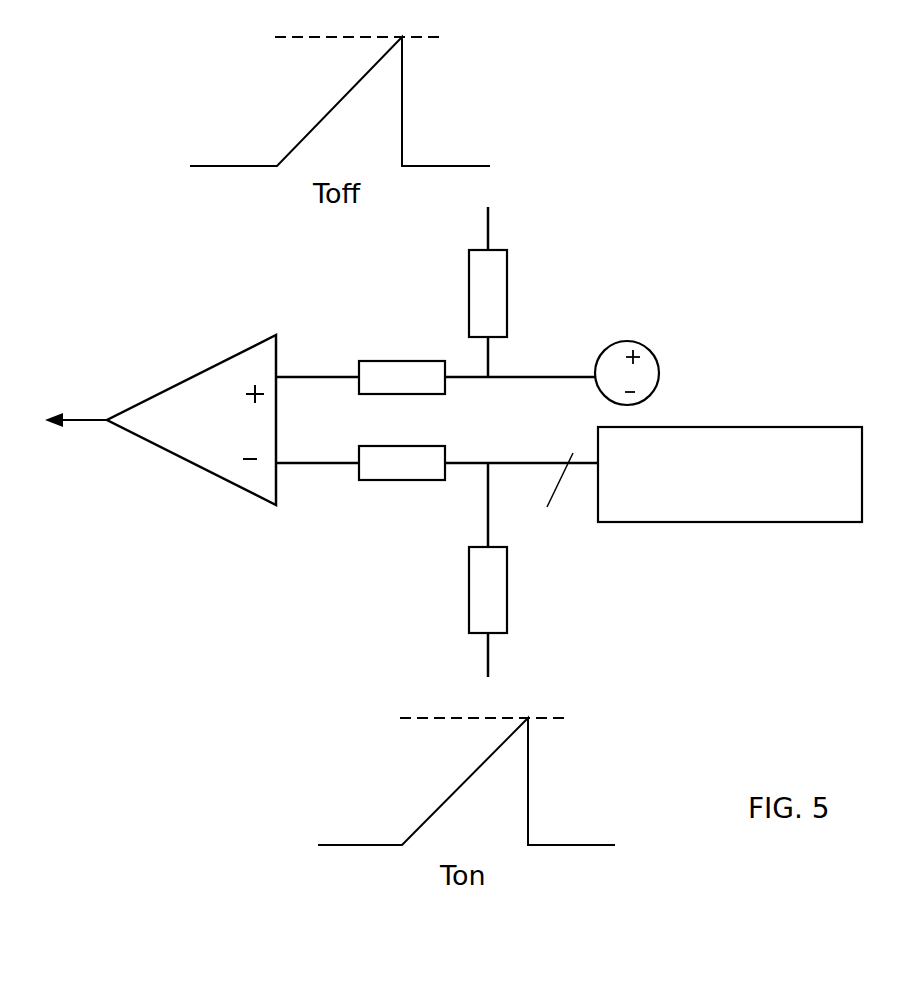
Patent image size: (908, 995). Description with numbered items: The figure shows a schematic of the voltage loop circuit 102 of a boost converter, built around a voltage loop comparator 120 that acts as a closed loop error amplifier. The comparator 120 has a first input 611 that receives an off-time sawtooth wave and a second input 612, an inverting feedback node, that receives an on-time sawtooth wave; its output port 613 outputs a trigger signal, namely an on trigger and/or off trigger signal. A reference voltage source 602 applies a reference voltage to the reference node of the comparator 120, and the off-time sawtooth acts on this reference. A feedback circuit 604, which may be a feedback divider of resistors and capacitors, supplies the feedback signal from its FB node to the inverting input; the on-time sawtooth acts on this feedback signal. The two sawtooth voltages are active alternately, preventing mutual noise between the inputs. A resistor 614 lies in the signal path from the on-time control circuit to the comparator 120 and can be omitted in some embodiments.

The voltage loop circuit 102 is at (694, 126).
The voltage loop comparator 120 is at (258, 448).
The reference voltage source 602 is at (647, 343).
The feedback circuit 604 is at (761, 492).
The first input 611 is at (303, 377).
The second input 612 is at (335, 458).
The output port 613 is at (113, 407).
The resistor 614 is at (455, 583).